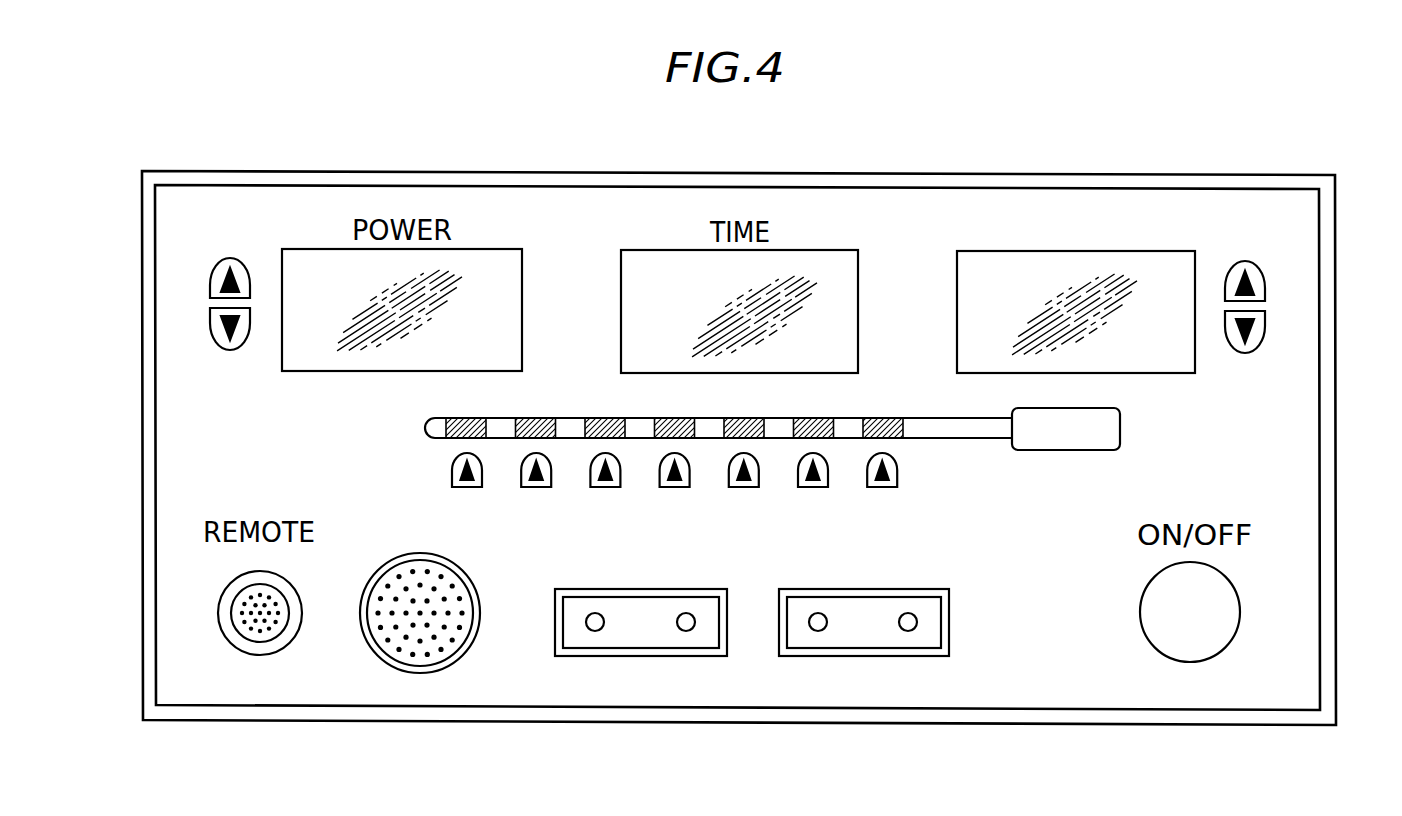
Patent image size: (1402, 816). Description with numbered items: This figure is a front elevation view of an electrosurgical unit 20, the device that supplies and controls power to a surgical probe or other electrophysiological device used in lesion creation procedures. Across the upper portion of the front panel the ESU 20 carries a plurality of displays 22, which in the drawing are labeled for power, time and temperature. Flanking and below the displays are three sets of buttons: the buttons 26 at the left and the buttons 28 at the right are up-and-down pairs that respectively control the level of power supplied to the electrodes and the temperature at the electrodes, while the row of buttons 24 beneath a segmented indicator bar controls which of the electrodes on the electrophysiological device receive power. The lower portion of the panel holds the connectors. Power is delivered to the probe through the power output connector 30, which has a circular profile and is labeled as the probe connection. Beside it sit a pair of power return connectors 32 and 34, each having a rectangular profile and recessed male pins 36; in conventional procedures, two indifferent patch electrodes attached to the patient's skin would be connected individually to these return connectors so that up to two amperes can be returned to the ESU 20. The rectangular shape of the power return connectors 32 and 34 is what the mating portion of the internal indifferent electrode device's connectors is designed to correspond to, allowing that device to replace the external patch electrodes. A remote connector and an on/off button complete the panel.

The electrosurgical unit 20 is at (1172, 171).
The displays 22 is at (1164, 250).
The buttons 24 is at (921, 471).
The buttons 26 is at (213, 243).
The buttons 28 is at (1270, 277).
The power output connector 30 is at (412, 674).
The power return connector 32 is at (630, 610).
The power return connector 34 is at (865, 658).
The recessed male pins 36 is at (594, 632).